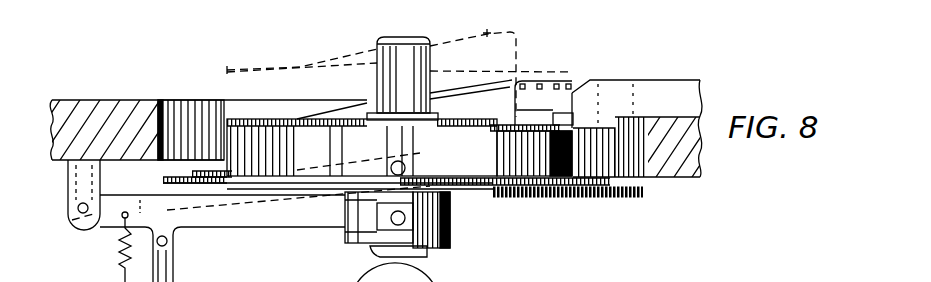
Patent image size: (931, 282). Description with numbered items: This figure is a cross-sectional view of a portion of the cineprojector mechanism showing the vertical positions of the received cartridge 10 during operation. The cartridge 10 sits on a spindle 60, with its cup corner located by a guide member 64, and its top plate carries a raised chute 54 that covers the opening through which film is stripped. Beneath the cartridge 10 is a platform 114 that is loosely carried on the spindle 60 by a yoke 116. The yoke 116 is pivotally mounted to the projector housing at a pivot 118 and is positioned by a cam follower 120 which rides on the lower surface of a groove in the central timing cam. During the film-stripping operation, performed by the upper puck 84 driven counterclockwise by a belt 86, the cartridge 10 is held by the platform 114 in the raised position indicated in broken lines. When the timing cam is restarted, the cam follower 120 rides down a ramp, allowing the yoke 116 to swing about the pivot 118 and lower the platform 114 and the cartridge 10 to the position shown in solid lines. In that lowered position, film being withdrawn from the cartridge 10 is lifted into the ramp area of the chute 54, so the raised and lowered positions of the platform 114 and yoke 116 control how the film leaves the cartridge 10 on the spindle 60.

The cartridge 10 is at (478, 163).
The chute 54 is at (503, 80).
The spindle 60 is at (378, 37).
The guide member 64 is at (610, 80).
The upper puck 84 is at (449, 268).
The belt 86 is at (540, 276).
The platform 114 is at (608, 198).
The yoke 116 is at (293, 221).
The pivot 118 is at (70, 207).
The cam follower 120 is at (170, 262).